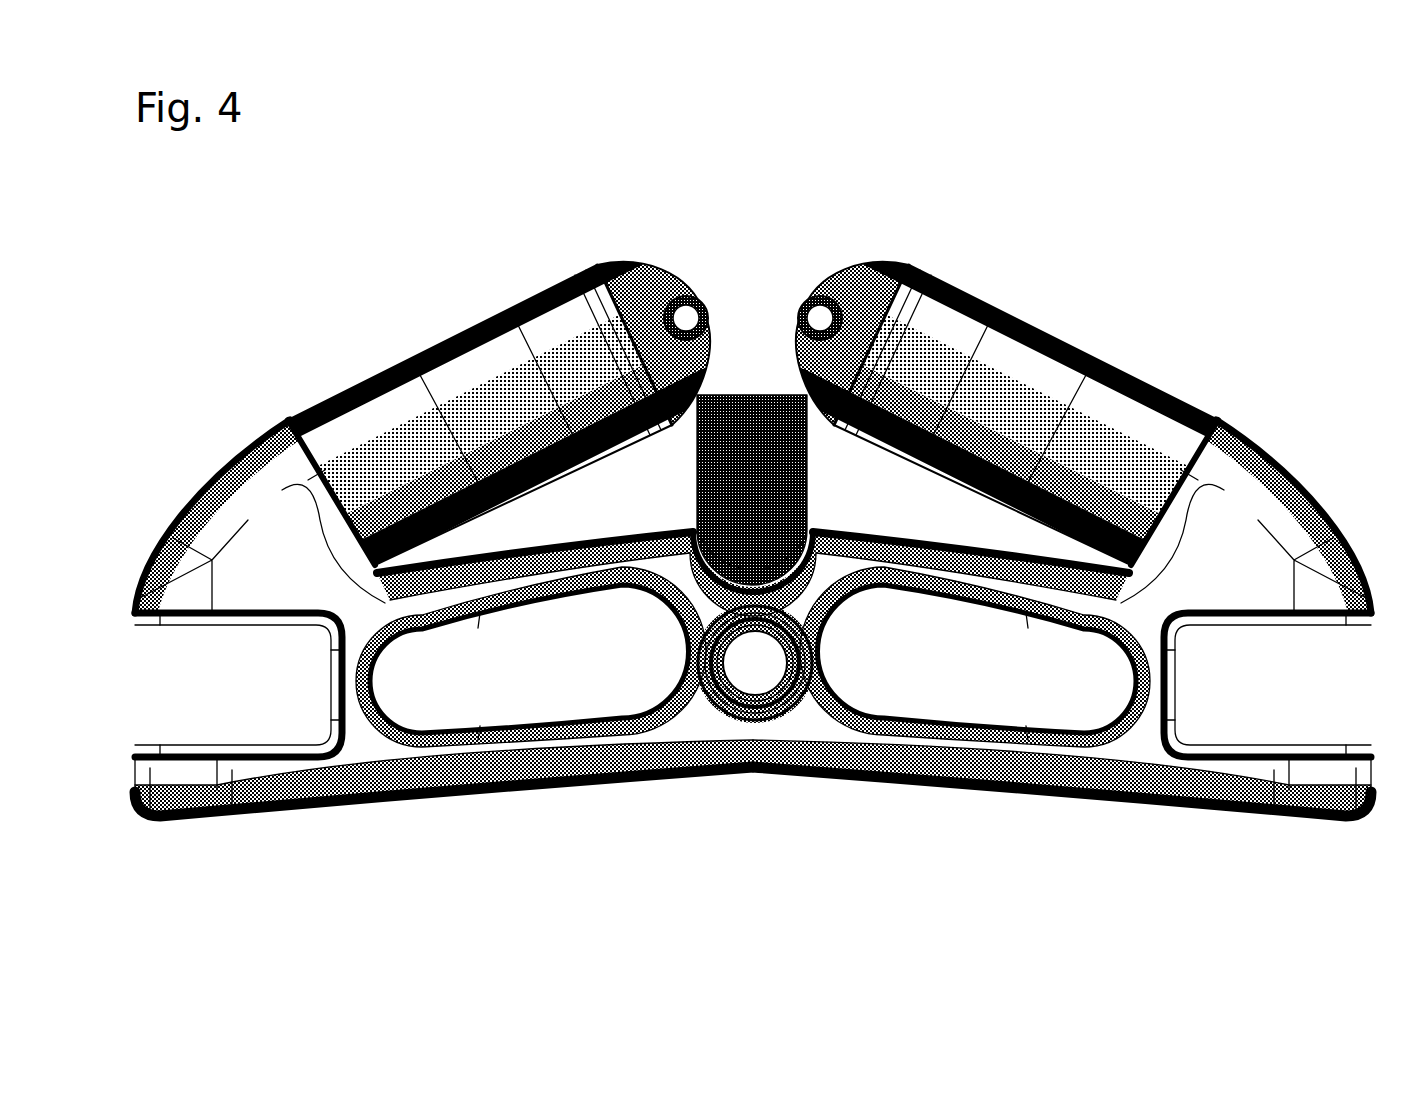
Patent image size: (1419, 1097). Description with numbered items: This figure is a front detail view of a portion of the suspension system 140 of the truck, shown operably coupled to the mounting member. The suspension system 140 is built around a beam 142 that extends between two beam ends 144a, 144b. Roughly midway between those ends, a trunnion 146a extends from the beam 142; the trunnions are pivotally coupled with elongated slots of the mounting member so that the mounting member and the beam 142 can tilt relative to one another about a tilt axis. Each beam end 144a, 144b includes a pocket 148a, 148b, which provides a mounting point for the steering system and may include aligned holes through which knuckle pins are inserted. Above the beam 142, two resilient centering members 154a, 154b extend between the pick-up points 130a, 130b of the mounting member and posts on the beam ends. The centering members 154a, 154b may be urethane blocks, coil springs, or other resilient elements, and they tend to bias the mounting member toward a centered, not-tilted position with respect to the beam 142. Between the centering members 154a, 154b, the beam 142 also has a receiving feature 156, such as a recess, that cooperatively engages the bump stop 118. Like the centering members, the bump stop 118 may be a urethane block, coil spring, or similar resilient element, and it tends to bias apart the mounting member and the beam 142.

The suspension system 140 is at (1172, 232).
The beam 142 is at (536, 784).
The bump stop 118 is at (742, 474).
The pick-up point 130a is at (816, 310).
The pick-up point 130b is at (690, 312).
The centering member 154a is at (1099, 343).
The centering member 154b is at (426, 336).
The pocket 148a is at (1356, 704).
The pocket 148b is at (226, 711).
The beam end 144a is at (1382, 778).
The beam end 144b is at (136, 795).
The trunnion 146a is at (752, 682).
The receiving feature 156 is at (775, 557).